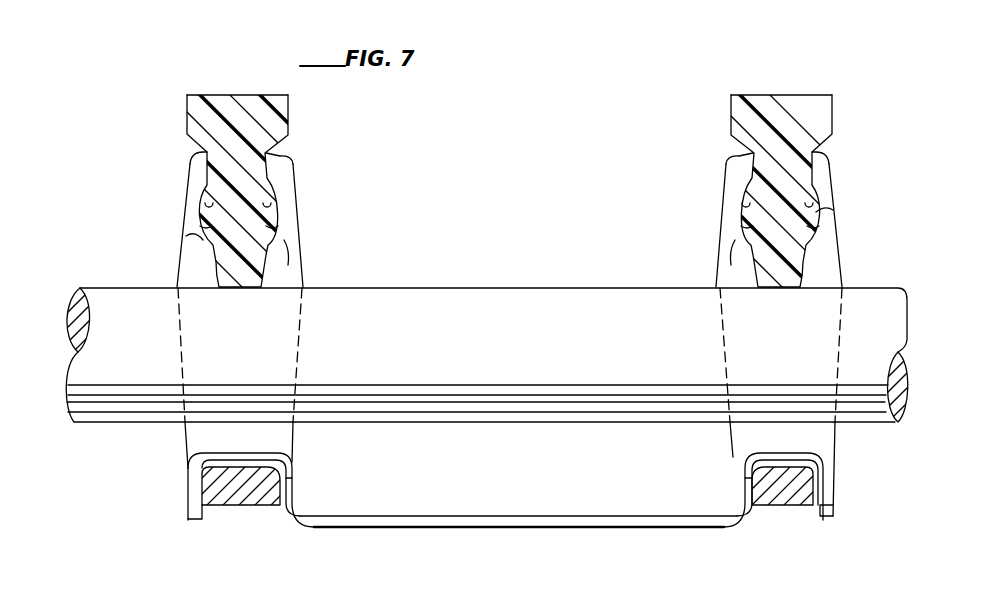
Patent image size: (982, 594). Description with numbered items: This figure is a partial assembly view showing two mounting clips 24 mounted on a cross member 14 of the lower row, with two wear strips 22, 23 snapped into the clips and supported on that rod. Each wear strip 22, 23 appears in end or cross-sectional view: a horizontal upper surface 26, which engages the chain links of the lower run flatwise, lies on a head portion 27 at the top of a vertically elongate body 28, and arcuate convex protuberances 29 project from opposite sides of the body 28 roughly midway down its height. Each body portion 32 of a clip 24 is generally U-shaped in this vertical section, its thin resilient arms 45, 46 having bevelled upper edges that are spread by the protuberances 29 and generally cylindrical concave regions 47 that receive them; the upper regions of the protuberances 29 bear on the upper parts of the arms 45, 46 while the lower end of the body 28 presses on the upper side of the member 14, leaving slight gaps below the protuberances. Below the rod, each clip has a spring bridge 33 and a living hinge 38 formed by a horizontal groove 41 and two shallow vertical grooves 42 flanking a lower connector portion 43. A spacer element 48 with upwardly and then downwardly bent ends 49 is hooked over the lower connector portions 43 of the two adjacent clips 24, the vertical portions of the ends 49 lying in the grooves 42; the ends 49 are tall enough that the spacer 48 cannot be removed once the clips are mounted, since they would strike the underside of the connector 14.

The cross member 14 is at (470, 296).
The wear strip 22 is at (789, 80).
The wear strip 23 is at (238, 92).
The mounting clip 24 is at (177, 228).
The upper surface 26 is at (197, 95).
The head portion 27 is at (200, 117).
The body 28 is at (253, 170).
The protuberances 29 is at (200, 236).
The body portion 32 is at (306, 260).
The spring bridge 33 is at (186, 460).
The living hinge 38 is at (210, 516).
The horizontal groove 41 is at (197, 440).
The vertical grooves 42 is at (296, 477).
The lower connector portion 43 is at (258, 500).
The arm 45 is at (270, 157).
The arm 46 is at (192, 170).
The concave regions 47 is at (200, 198).
The spacer element 48 is at (503, 515).
The bent ends 49 is at (238, 457).